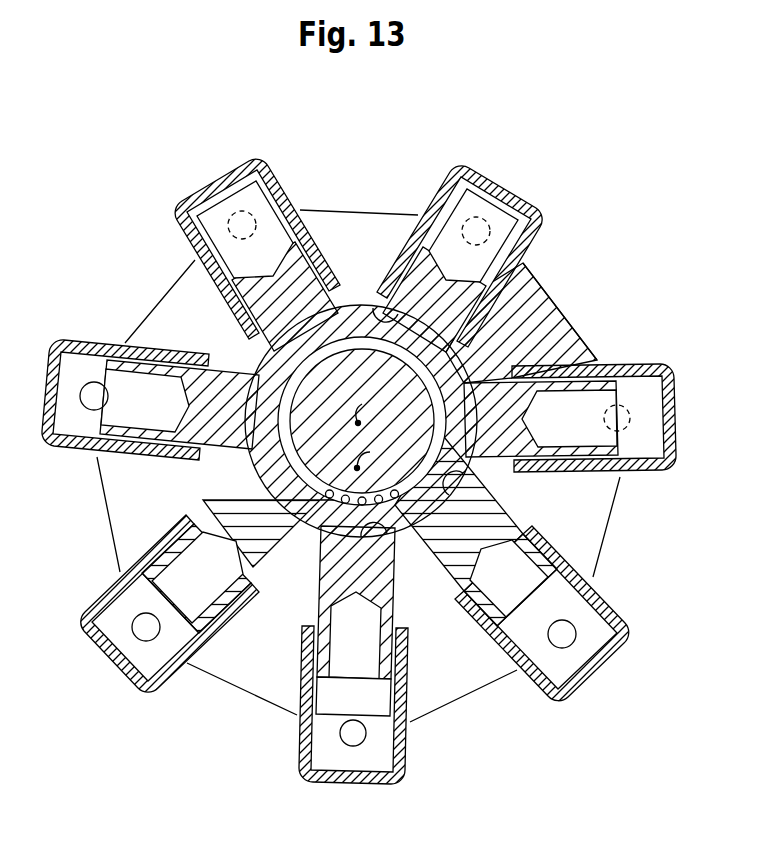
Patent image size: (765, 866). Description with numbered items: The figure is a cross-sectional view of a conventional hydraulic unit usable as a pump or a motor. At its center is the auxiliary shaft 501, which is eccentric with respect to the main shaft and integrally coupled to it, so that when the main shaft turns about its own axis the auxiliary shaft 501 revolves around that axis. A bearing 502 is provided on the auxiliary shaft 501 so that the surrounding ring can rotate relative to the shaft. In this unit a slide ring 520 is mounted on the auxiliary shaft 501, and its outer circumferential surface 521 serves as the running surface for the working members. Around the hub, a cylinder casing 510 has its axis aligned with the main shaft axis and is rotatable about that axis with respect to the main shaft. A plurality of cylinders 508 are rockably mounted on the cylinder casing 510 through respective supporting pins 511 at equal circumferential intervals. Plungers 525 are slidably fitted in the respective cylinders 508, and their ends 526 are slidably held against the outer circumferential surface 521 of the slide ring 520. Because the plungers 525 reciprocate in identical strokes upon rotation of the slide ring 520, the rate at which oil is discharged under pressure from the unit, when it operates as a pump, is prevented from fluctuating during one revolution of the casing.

The auxiliary shaft 501 is at (300, 450).
The bearing 502 is at (303, 527).
The cylinders 508 is at (480, 167).
The cylinder casing 510 is at (452, 685).
The supporting pins 511 is at (500, 207).
The slide ring 520 is at (480, 350).
The outer circumferential surface 521 is at (474, 364).
The plungers 525 is at (513, 247).
The ends 526 is at (378, 308).